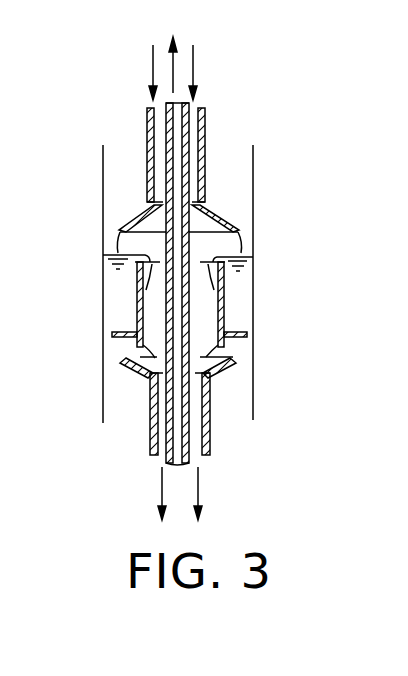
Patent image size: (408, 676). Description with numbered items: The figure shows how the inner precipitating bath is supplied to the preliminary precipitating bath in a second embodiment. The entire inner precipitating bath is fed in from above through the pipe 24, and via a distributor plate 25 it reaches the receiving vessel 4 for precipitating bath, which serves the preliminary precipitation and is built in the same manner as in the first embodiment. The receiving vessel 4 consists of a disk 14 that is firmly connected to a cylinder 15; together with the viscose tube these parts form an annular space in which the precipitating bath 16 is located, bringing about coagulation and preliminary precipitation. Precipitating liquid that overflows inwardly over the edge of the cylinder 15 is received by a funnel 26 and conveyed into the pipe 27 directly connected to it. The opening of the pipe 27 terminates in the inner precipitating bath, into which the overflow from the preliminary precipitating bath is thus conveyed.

The receiving vessel 4 is at (113, 302).
The disk 14 is at (245, 333).
The cylinder 15 is at (223, 302).
The precipitating bath 16 is at (242, 280).
The pipe 24 is at (190, 138).
The distributor plate 25 is at (217, 214).
The funnel 26 is at (227, 372).
The pipe 27 is at (207, 432).